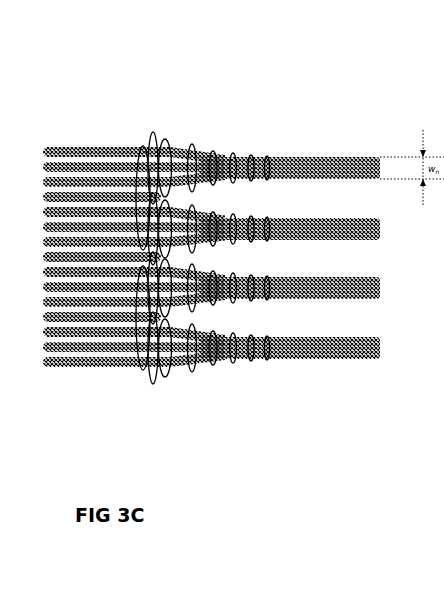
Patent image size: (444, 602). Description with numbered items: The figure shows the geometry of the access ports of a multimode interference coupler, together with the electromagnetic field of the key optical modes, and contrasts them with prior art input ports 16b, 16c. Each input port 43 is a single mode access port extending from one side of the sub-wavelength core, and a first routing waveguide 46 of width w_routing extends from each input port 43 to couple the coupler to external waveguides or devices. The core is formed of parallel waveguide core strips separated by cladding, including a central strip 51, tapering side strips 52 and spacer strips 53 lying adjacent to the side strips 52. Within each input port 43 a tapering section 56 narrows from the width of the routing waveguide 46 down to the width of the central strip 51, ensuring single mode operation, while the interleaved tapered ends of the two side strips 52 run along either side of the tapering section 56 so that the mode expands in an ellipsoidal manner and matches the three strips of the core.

The prior art input port 16b is at (190, 229).
The prior art input port 16c is at (190, 288).
The input port 43 is at (192, 104).
The first routing waveguide 46 is at (332, 157).
The central strip 51 is at (43, 182).
The tapering side strip 52 is at (43, 163).
The spacer strip 53 is at (163, 198).
The tapering section 56 is at (243, 157).